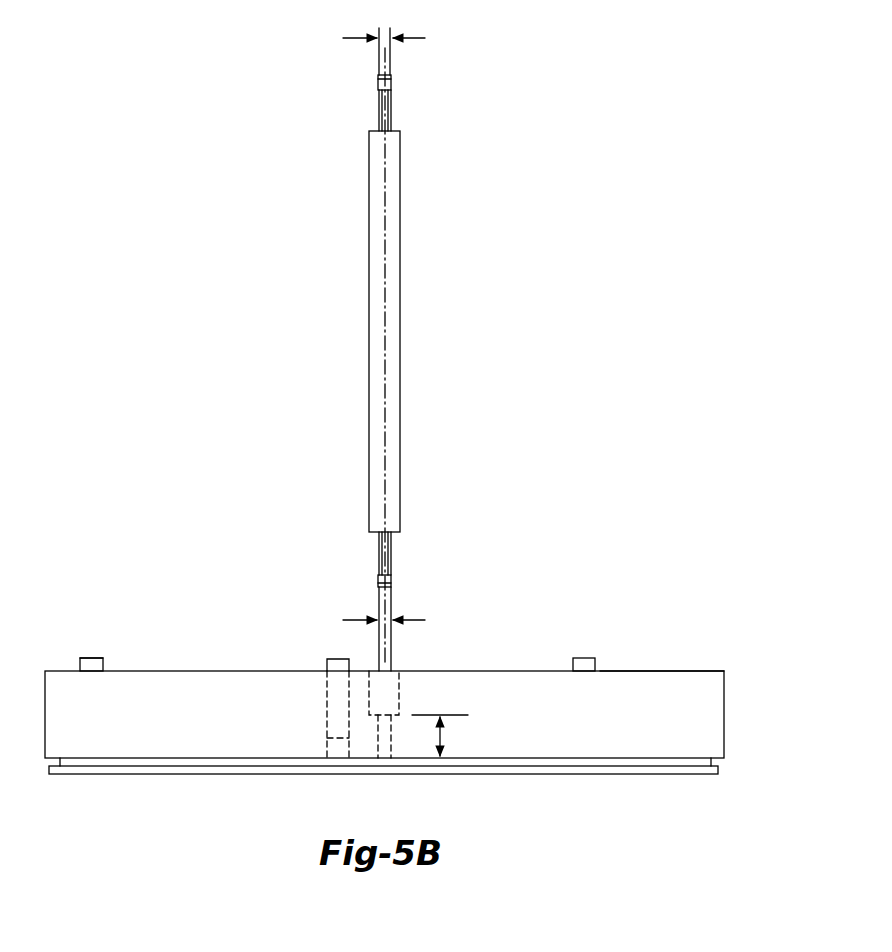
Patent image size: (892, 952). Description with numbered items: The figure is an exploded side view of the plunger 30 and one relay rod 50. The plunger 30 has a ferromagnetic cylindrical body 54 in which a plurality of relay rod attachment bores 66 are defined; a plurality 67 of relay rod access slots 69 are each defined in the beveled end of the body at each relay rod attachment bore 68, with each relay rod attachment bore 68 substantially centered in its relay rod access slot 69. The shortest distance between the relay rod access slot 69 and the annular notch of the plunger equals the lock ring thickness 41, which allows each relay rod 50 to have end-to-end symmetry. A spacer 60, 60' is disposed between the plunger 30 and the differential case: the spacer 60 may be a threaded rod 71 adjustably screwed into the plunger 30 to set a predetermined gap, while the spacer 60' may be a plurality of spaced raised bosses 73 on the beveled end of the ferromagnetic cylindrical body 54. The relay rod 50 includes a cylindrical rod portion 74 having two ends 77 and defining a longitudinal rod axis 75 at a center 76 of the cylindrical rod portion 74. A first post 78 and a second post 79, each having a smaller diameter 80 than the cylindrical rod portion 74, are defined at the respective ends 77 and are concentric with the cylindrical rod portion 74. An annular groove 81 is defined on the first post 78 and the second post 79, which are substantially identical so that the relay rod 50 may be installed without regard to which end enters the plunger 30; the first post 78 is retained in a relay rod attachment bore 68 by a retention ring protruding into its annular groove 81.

The plunger 30 is at (728, 690).
The lock ring thickness 41 is at (448, 737).
The relay rod 50 is at (389, 342).
The ferromagnetic cylindrical body 54 is at (683, 671).
The spacer 60 is at (320, 681).
The spacer 60' is at (335, 635).
The relay rod attachment bores 66 is at (434, 758).
The relay rod attachment bore 68 is at (393, 745).
The plurality of relay rod access slots 67 is at (427, 679).
The relay rod access slot 69 is at (388, 682).
The threaded rod 71 is at (333, 715).
The raised bosses 73 is at (98, 658).
The cylindrical rod portion 74 is at (400, 275).
The longitudinal rod axis 75 is at (387, 182).
The center 76 is at (387, 225).
The ends 77 is at (378, 110).
The first post 78 is at (392, 552).
The second post 79 is at (392, 110).
The smaller diameter 80 is at (355, 37).
The annular groove 81 is at (378, 82).